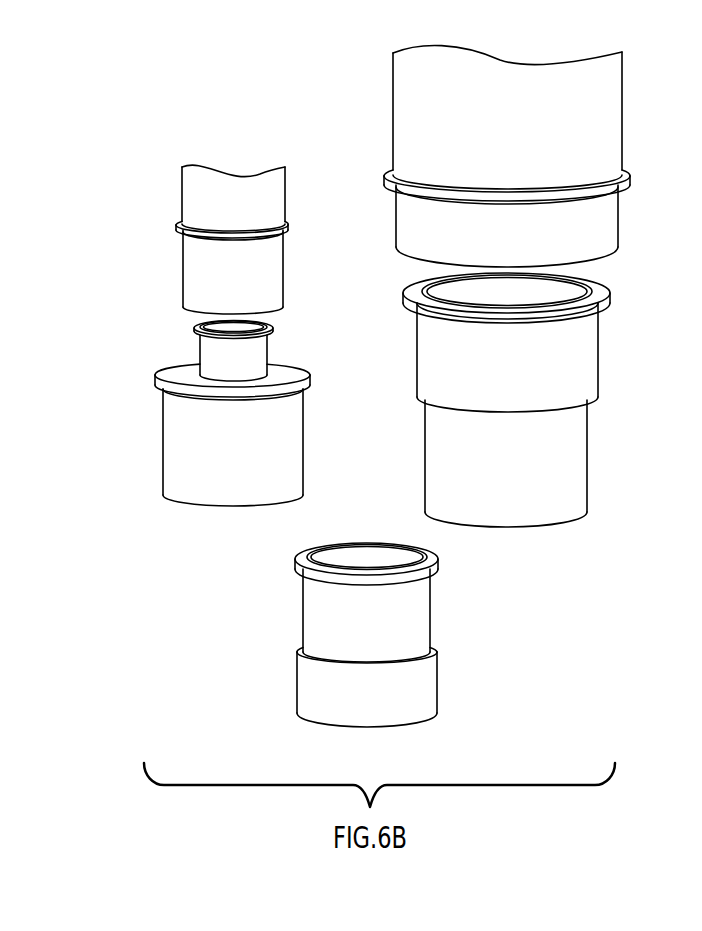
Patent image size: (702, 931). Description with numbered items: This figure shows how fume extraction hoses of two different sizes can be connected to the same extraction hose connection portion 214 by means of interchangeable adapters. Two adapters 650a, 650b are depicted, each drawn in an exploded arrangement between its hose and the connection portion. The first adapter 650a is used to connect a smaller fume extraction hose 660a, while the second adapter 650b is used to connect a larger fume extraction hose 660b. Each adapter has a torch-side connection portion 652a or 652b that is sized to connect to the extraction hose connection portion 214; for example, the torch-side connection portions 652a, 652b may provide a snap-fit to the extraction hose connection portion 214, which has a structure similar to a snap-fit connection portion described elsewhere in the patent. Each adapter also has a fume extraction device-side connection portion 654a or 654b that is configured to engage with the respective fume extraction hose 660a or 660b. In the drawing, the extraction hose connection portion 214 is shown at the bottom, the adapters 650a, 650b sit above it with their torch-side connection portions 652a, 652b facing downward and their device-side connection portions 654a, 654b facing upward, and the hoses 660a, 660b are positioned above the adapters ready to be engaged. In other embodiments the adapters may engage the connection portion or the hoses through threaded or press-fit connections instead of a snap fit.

The smaller fume extraction hose 660a is at (183, 259).
The fume extraction device-side connection portion 654a is at (193, 327).
The adapter 650a is at (155, 383).
The torch-side connection portion 652a is at (182, 463).
The larger fume extraction hose 660b is at (617, 217).
The fume extraction device-side connection portion 654b is at (595, 322).
The adapter 650b is at (597, 393).
The torch-side connection portion 652b is at (575, 472).
The extraction hose connection portion 214 is at (438, 690).